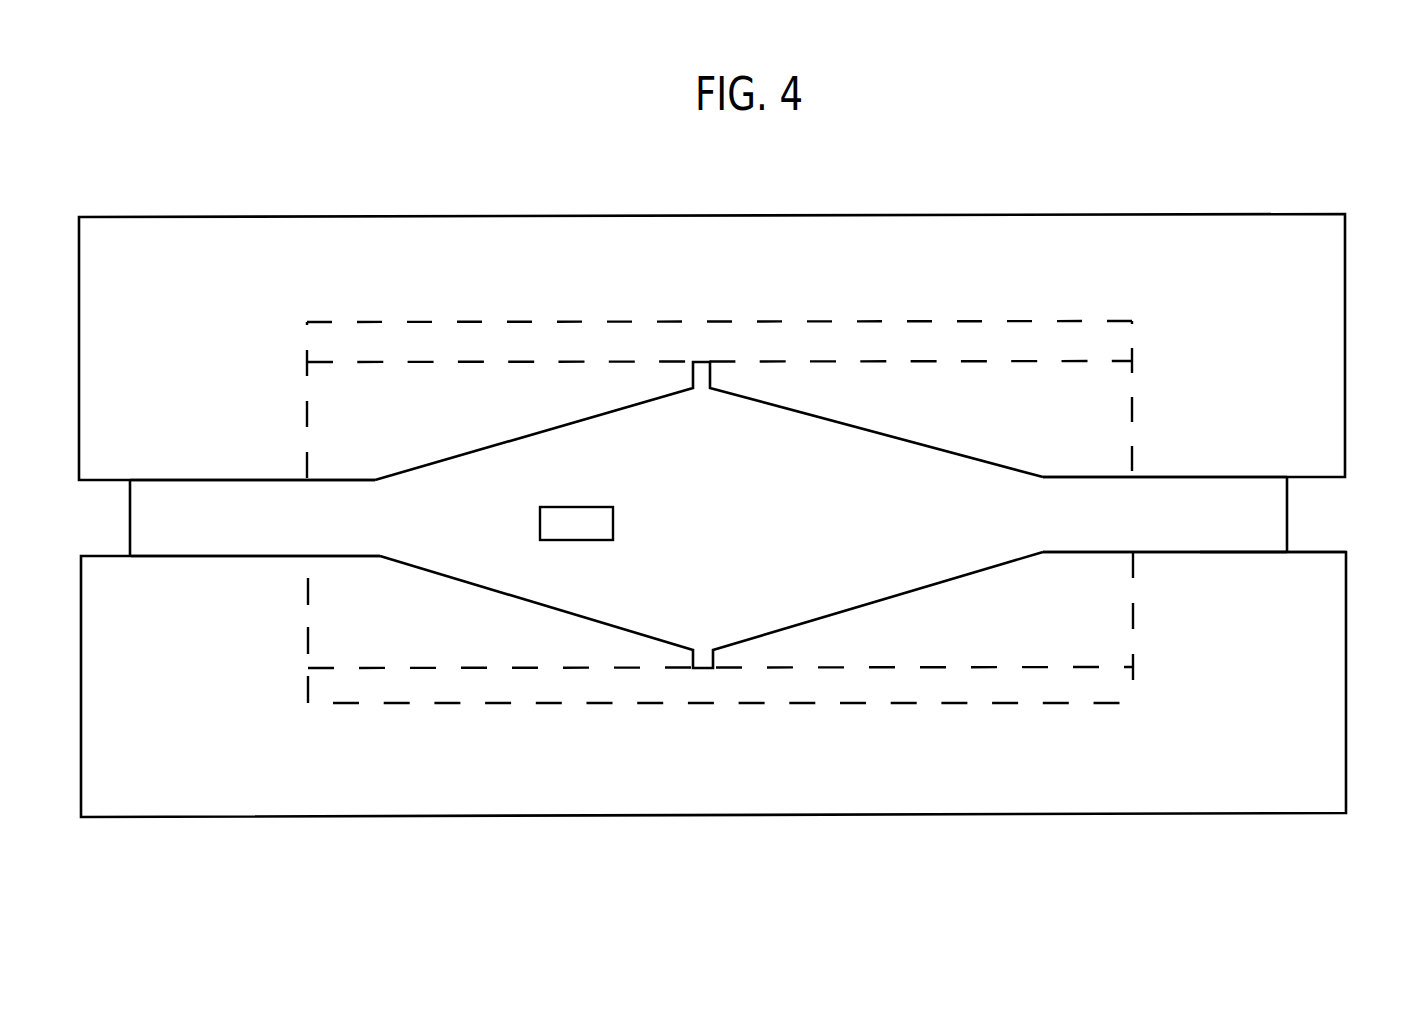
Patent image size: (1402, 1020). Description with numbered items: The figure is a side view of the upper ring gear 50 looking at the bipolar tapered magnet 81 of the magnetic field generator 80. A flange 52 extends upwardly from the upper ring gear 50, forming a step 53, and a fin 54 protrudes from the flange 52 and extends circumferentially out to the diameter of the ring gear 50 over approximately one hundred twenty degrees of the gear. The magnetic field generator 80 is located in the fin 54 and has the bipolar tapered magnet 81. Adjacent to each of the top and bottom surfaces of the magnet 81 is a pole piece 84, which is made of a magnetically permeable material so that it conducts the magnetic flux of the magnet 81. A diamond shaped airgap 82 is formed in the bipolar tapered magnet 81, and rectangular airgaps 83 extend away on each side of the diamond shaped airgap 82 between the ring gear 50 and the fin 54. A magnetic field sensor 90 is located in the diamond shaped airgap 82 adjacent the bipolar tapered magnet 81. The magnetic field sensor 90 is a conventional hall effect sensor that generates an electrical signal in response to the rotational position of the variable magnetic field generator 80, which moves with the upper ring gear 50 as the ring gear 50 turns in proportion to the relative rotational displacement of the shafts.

The magnetic field generator 80 is at (237, 141).
The upper ring gear 50 is at (1065, 787).
The fin 54 is at (503, 270).
The flange 52 is at (1287, 500).
The step 53 is at (1297, 550).
The diamond shaped airgap 82 is at (892, 525).
The rectangular airgaps 83 is at (226, 540).
The bipolar tapered magnet 81 is at (305, 417).
The pole piece 84 is at (931, 337).
The magnetic field sensor 90 is at (608, 525).